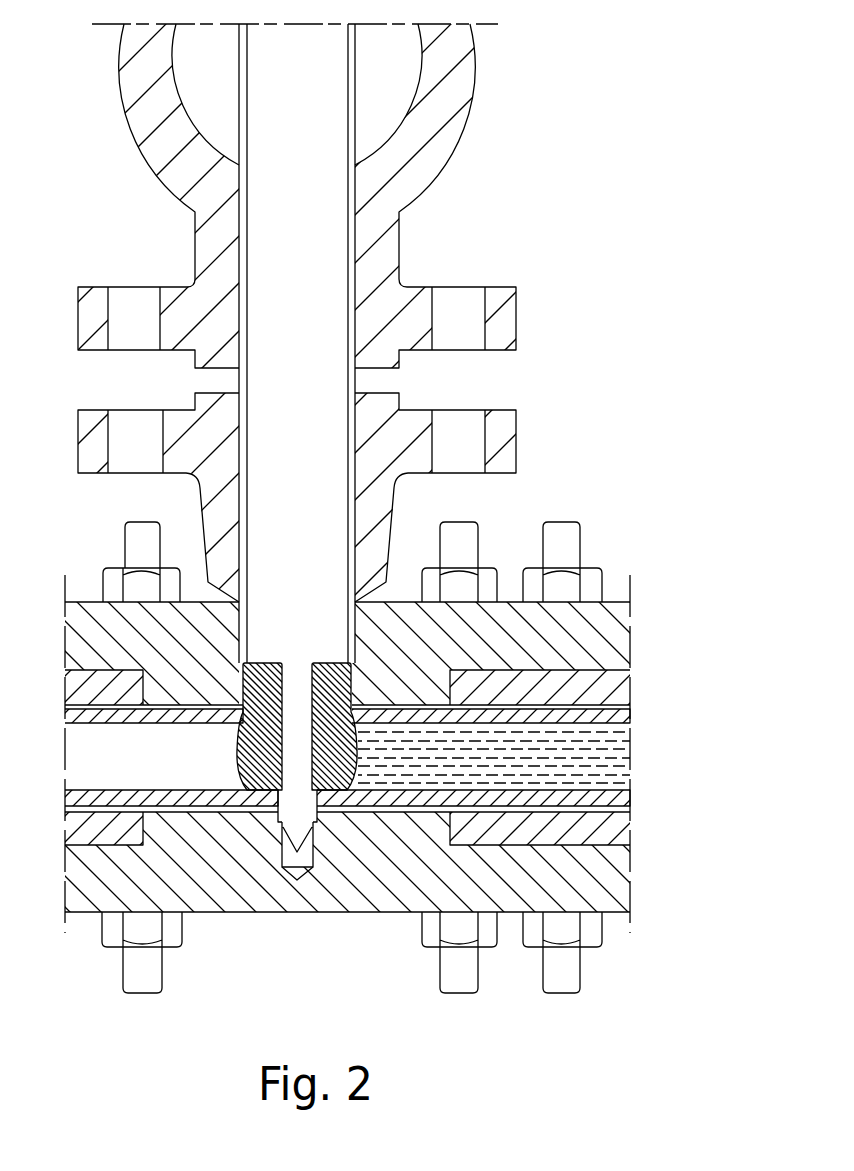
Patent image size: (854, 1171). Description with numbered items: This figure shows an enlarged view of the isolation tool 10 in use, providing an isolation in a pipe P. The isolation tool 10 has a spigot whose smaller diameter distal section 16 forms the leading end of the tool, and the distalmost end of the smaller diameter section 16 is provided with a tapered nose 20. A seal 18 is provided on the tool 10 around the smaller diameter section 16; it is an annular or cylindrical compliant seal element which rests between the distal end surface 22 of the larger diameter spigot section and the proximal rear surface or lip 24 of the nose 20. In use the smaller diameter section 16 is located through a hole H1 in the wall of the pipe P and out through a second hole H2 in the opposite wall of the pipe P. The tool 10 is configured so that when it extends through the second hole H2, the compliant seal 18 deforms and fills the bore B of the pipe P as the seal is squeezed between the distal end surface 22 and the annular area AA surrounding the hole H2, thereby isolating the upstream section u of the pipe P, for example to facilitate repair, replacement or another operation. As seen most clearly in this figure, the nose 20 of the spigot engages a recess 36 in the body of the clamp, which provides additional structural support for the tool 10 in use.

The isolation tool 10 is at (293, 420).
The distal section 16 is at (293, 753).
The seal 18 is at (238, 750).
The tapered nose 20 is at (292, 835).
The distal end surface 22 is at (340, 657).
The lip 24 is at (292, 808).
The recess 36 is at (317, 847).
The hole H1 is at (243, 712).
The second hole H2 is at (317, 808).
The annular area AA is at (316, 796).
The bore B is at (517, 845).
The pipe P is at (517, 754).
The upstream section u is at (522, 777).